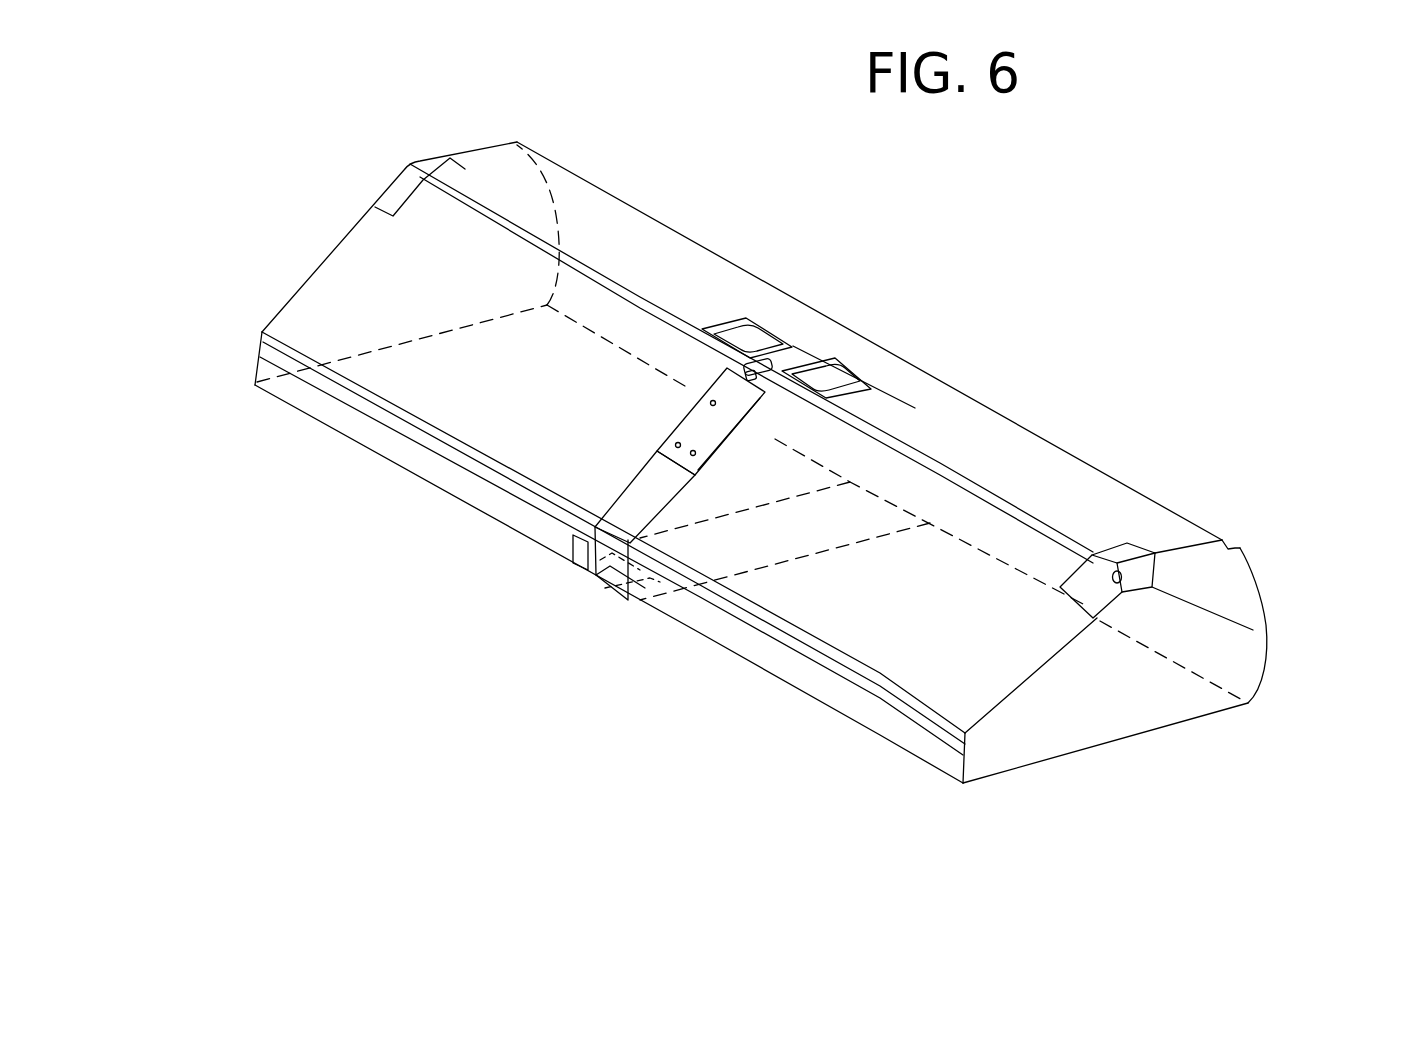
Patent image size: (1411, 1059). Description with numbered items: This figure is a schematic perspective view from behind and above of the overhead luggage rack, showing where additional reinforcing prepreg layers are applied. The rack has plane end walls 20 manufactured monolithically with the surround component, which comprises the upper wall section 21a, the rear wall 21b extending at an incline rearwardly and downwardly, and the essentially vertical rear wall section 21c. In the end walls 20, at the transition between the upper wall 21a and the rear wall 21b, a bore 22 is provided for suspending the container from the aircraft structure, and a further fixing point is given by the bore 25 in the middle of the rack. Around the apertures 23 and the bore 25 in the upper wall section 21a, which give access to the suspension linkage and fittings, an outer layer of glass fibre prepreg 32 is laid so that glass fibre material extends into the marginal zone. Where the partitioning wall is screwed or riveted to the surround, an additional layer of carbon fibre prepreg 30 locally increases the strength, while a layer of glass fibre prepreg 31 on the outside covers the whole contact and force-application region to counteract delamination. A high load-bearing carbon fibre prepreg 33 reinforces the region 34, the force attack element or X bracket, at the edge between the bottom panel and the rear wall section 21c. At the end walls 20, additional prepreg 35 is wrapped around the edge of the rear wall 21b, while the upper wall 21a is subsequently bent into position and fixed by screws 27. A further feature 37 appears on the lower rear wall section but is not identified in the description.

The end wall 20 is at (820, 434).
The upper wall section 21a is at (677, 330).
The rear wall 21b is at (658, 460).
The rear wall section 21c is at (595, 557).
The bore 22 is at (1158, 661).
The aperture 23 is at (848, 328).
The bore 25 is at (766, 260).
The screw 27 is at (424, 145).
The carbon fibre prepreg layer 30 is at (644, 406).
The glass fibre prepreg layer 31 is at (591, 471).
The glass fibre prepreg 32 is at (913, 368).
The carbon fibre prepreg 33 is at (669, 639).
The force attack element 34 is at (574, 623).
The additional prepreg 35 is at (1174, 536).
The rail groove 37 is at (614, 579).